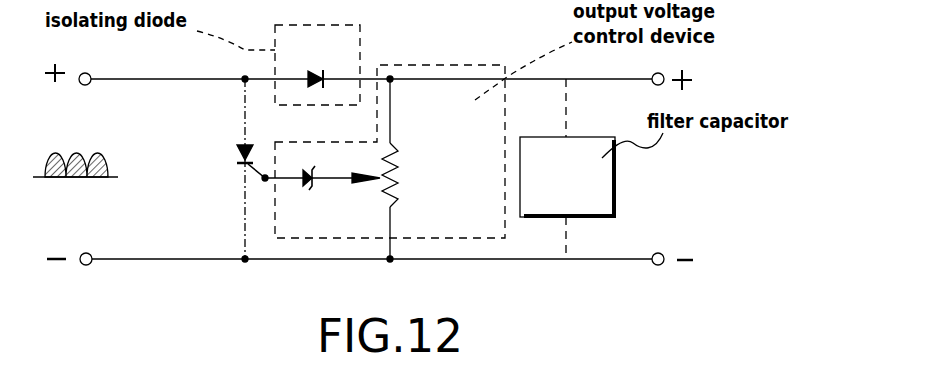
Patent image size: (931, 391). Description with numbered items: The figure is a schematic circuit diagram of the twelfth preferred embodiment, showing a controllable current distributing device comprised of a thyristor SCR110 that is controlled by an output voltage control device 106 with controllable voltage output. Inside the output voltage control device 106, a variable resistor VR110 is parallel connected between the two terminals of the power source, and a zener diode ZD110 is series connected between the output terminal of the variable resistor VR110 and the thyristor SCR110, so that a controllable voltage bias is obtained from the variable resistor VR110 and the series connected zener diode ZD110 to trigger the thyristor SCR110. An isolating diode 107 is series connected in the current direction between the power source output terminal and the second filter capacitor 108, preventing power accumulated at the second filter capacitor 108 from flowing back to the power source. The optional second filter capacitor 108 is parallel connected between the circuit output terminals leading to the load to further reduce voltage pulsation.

The output voltage control device 106 is at (323, 136).
The isolating diode 107 is at (317, 65).
The second filter capacitor 108 is at (568, 177).
The thyristor SCR110 is at (194, 146).
The zener diode ZD110 is at (322, 198).
The variable resistor VR110 is at (439, 169).